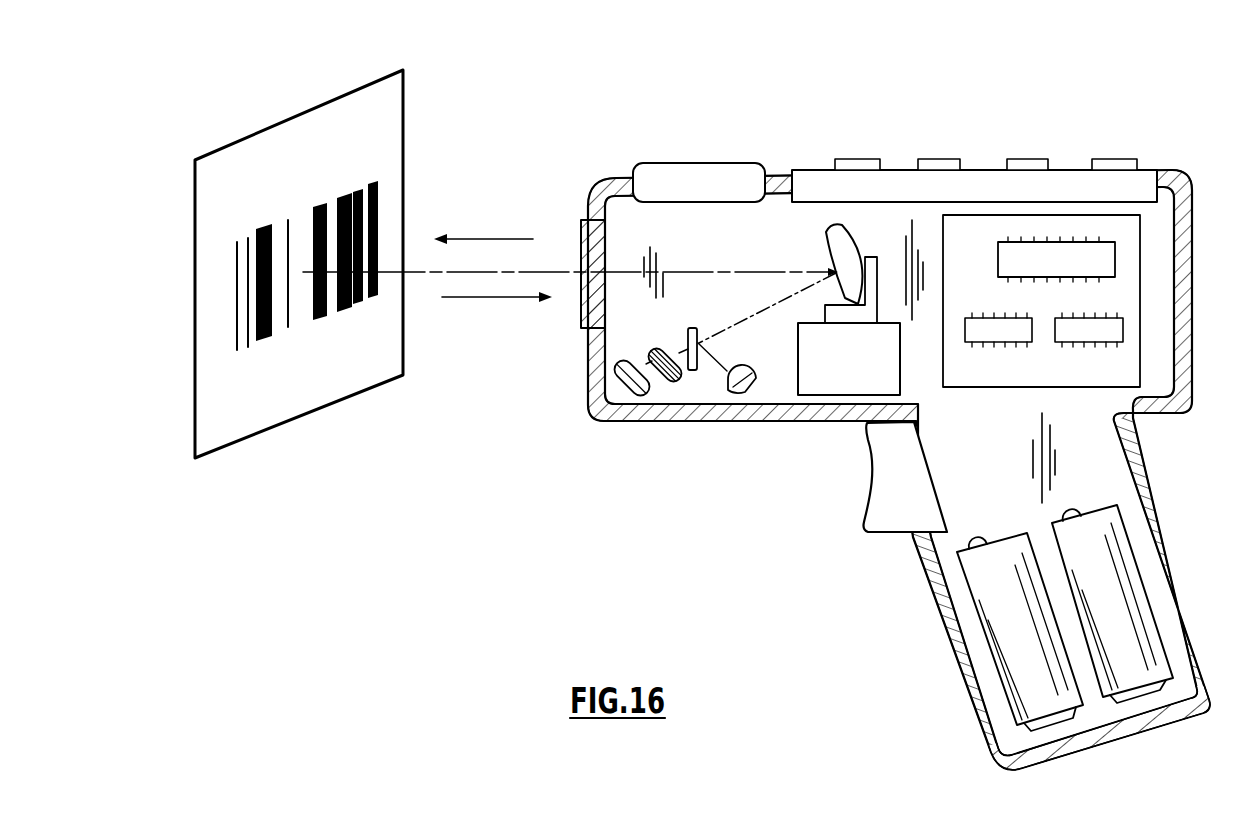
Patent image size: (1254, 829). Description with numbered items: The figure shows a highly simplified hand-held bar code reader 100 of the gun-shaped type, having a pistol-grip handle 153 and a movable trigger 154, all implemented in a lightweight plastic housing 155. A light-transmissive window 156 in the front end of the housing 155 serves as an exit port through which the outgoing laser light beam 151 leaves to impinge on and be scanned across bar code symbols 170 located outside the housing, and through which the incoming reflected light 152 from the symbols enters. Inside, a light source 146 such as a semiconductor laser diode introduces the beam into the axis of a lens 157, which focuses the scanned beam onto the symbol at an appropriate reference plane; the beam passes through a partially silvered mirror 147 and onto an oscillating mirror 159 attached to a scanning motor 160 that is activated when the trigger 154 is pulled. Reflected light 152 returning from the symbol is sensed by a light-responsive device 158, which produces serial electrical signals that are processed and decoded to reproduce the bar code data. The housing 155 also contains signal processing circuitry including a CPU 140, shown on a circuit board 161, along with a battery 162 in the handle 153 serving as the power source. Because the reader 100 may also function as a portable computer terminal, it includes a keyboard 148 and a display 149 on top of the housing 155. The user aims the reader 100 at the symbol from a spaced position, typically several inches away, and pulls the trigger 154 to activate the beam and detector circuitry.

The reader 100 is at (740, 540).
The CPU 140 is at (1018, 255).
The light source 146 is at (620, 380).
The partially silvered mirror 147 is at (689, 371).
The keyboard 148 is at (1070, 178).
The display 149 is at (748, 143).
The outgoing light beam 151 is at (510, 239).
The reflected light 152 is at (497, 298).
The handle 153 is at (948, 620).
The trigger 154 is at (886, 478).
The housing 155 is at (1183, 320).
The window 156 is at (582, 234).
The lens 157 is at (660, 390).
The light-responsive device 158 is at (743, 394).
The oscillating mirror 159 is at (846, 238).
The scanning motor 160 is at (832, 383).
The circuit board 161 is at (1142, 242).
The battery 162 is at (1138, 578).
The symbols 170 is at (368, 186).